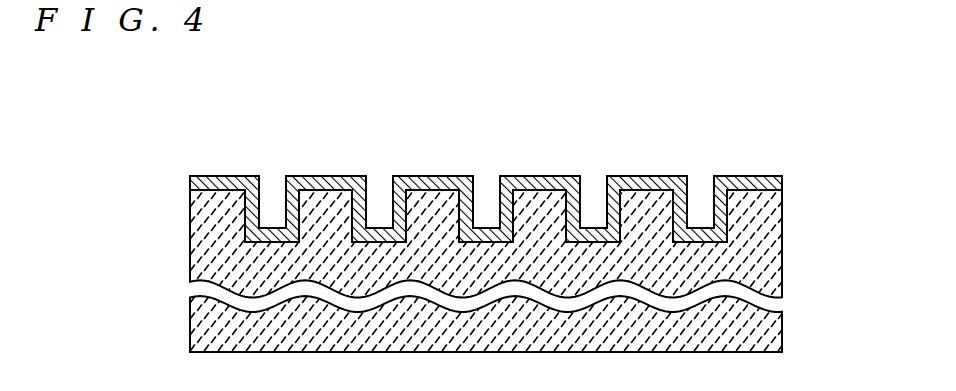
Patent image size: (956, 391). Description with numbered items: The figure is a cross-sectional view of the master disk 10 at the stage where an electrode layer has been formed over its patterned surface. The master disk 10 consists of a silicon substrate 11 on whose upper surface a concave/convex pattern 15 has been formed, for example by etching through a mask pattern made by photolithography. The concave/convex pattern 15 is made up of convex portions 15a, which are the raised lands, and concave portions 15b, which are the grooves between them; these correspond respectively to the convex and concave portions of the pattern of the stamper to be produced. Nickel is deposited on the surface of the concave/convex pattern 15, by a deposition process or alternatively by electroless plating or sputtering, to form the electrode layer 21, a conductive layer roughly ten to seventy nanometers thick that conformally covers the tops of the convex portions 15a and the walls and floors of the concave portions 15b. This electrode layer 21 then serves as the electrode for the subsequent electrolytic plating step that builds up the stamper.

The master disk 10 is at (493, 225).
The silicon substrate 11 is at (768, 273).
The concave/convex pattern 15 is at (463, 159).
The convex portions 15a is at (435, 205).
The concave portions 15b is at (486, 221).
The electrode layer 21 is at (783, 186).